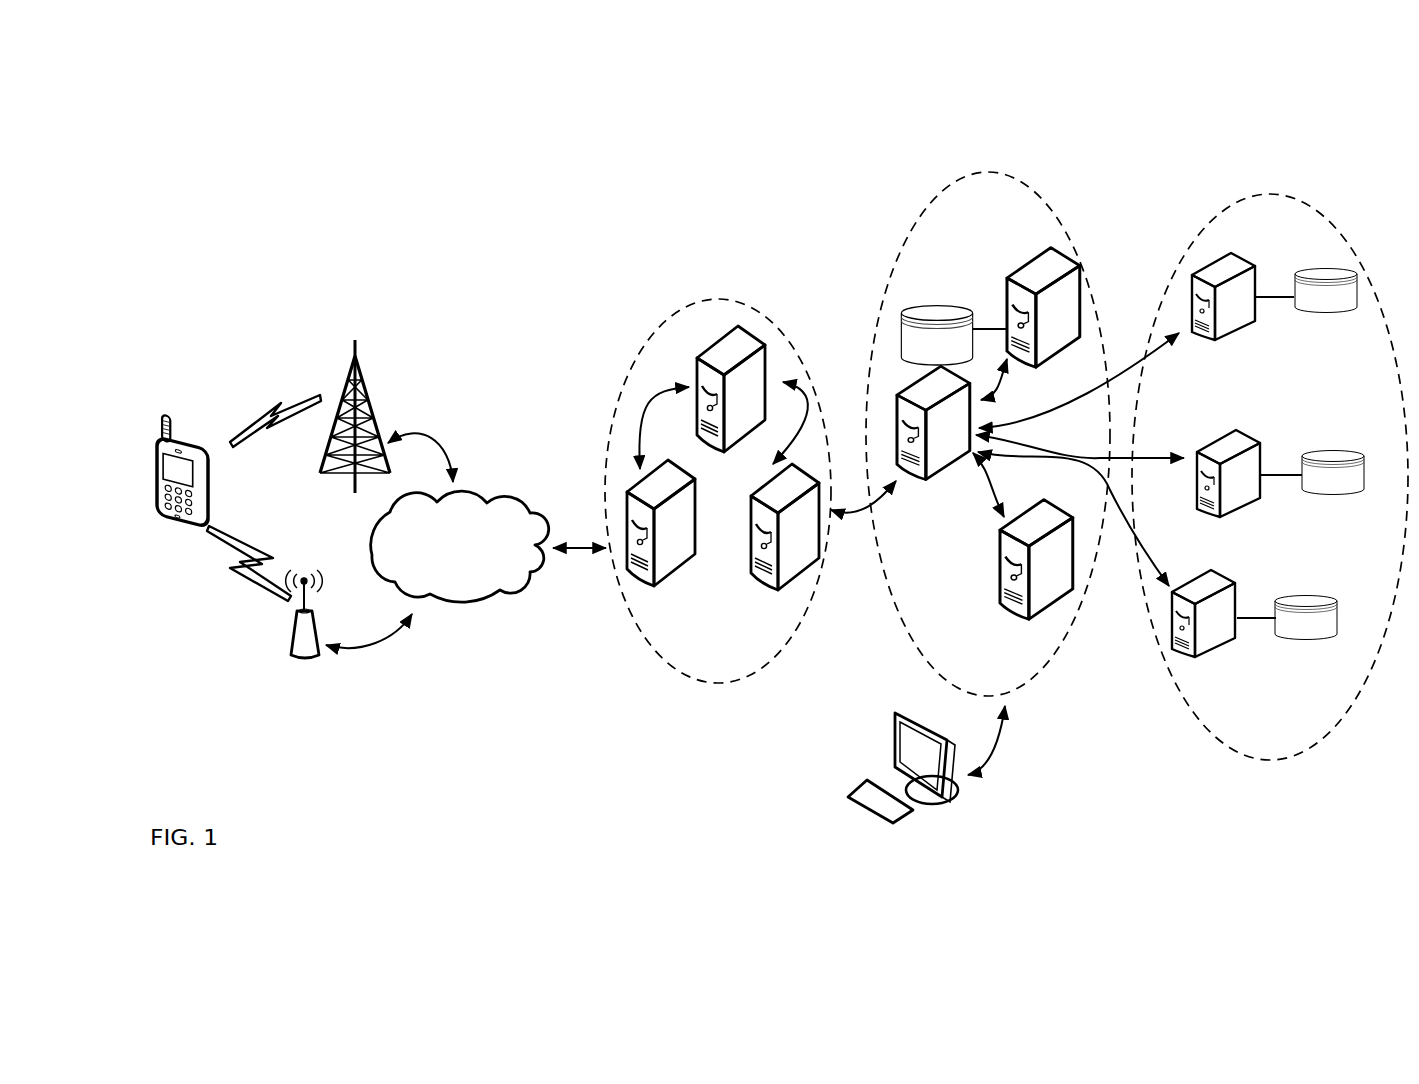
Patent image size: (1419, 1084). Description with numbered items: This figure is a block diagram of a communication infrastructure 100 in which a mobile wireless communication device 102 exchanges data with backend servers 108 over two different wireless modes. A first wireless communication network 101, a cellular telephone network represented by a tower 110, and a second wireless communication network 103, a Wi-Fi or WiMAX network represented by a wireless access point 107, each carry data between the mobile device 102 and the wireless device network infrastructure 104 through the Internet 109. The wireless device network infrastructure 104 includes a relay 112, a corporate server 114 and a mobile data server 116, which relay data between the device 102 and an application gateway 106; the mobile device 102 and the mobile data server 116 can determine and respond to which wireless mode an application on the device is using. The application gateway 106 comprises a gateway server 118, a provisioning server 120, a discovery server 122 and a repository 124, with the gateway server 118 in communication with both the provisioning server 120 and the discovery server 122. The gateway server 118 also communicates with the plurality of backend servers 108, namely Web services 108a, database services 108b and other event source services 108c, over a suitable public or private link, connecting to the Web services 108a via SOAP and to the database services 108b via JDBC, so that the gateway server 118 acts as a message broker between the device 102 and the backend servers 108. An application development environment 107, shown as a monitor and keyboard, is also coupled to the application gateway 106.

The communication infrastructure 100 is at (549, 245).
The first wireless communication network 101 is at (287, 385).
The mobile wireless communication device 102 is at (172, 522).
The second wireless communication network 103 is at (249, 614).
The wireless device network infrastructure 104 is at (709, 289).
The application gateway 106 is at (893, 229).
The application development environment 107 is at (296, 660).
The backend servers 108 is at (1291, 178).
The Web services 108a is at (1255, 318).
The database services 108b is at (1258, 443).
The event source services 108c is at (1213, 583).
The Internet 109 is at (503, 584).
The tower 110 is at (370, 412).
The relay 112 is at (688, 557).
The corporate server 114 is at (748, 425).
The mobile data server 116 is at (757, 585).
The gateway server 118 is at (957, 450).
The provisioning server 120 is at (1052, 256).
The discovery server 122 is at (1052, 600).
The repository 124 is at (940, 310).